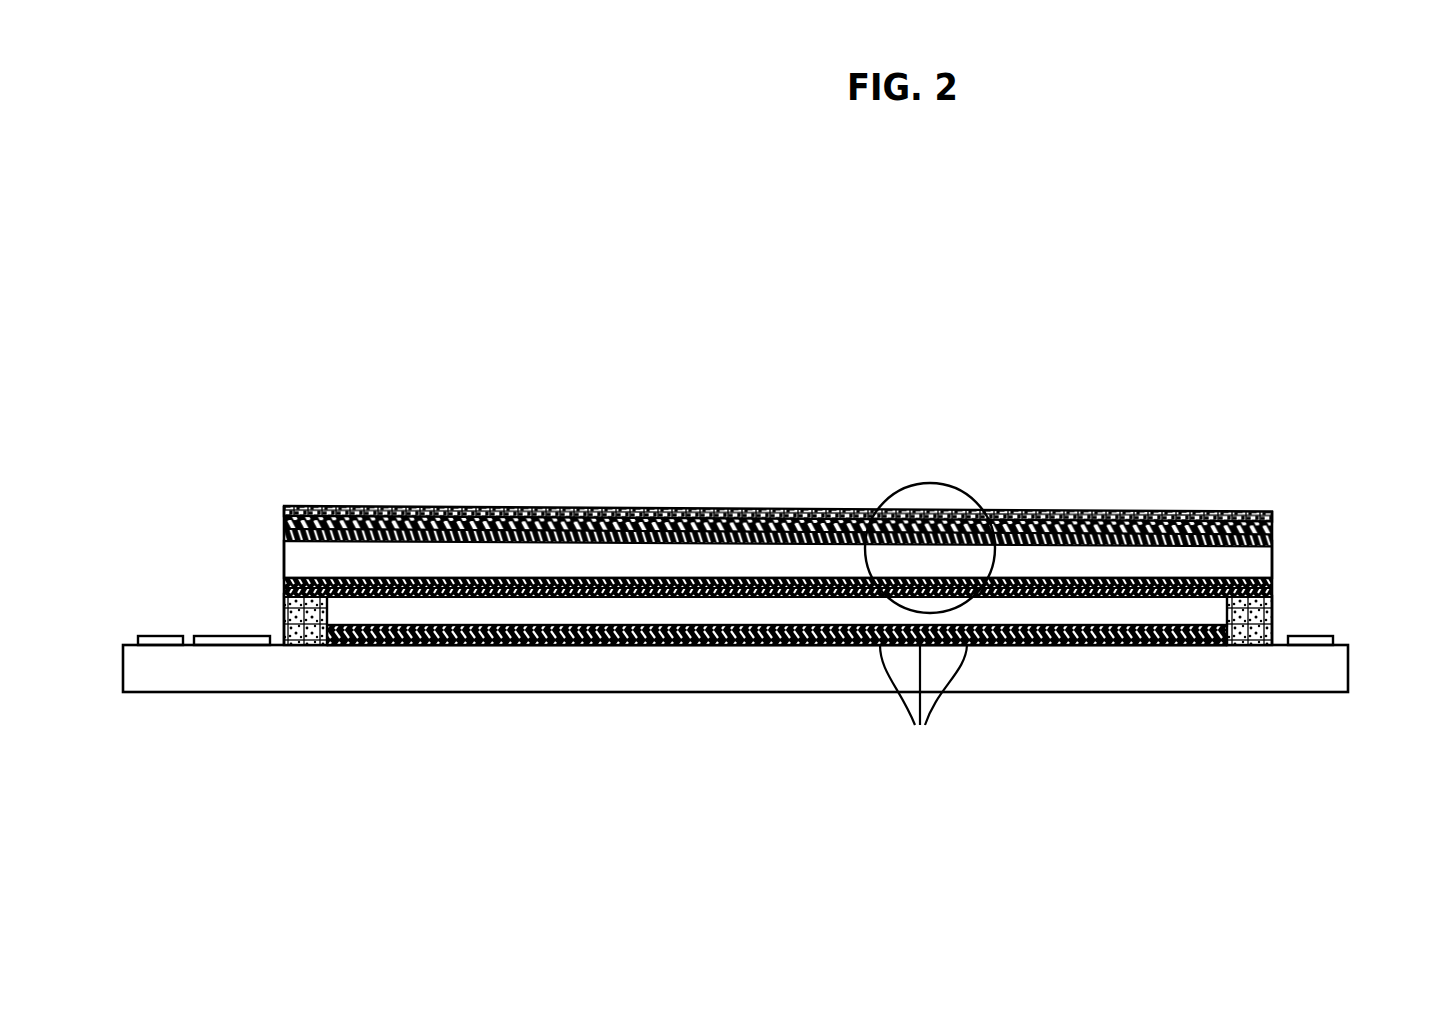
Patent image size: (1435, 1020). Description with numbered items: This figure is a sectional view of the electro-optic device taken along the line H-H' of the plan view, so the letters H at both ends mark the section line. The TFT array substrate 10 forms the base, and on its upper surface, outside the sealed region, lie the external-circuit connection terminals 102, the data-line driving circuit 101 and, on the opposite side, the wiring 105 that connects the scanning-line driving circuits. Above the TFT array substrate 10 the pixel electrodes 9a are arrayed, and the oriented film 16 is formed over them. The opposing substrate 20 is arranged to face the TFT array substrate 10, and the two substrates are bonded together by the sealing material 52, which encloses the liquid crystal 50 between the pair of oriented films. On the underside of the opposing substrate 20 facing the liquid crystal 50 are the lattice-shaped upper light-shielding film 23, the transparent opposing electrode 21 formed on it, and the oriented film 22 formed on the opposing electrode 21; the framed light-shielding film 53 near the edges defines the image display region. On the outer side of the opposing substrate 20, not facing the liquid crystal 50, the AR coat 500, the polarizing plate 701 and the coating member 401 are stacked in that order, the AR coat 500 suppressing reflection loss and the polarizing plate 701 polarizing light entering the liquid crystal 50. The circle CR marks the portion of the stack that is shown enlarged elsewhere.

The TFT array substrate 10 is at (1247, 675).
The oriented film 16 is at (777, 647).
The opposing substrate 20 is at (1135, 557).
The opposing electrode 21 is at (807, 577).
The oriented film 22 is at (688, 577).
The upper light-shielding film 23 is at (746, 577).
The liquid crystal 50 is at (700, 615).
The sealing material 52 is at (284, 600).
The light-shielding film 53 is at (335, 576).
The data-line driving circuit 101 is at (235, 636).
The external-circuit connection terminals 102 is at (163, 636).
The wiring 105 is at (1322, 636).
The coating member 401 is at (1272, 513).
The polarizing plate 701 is at (1272, 524).
The AR coat 500 is at (1272, 539).
The pixel electrode 9a is at (923, 704).
The enlarged region CR is at (955, 490).
The height reference H is at (731, 398).